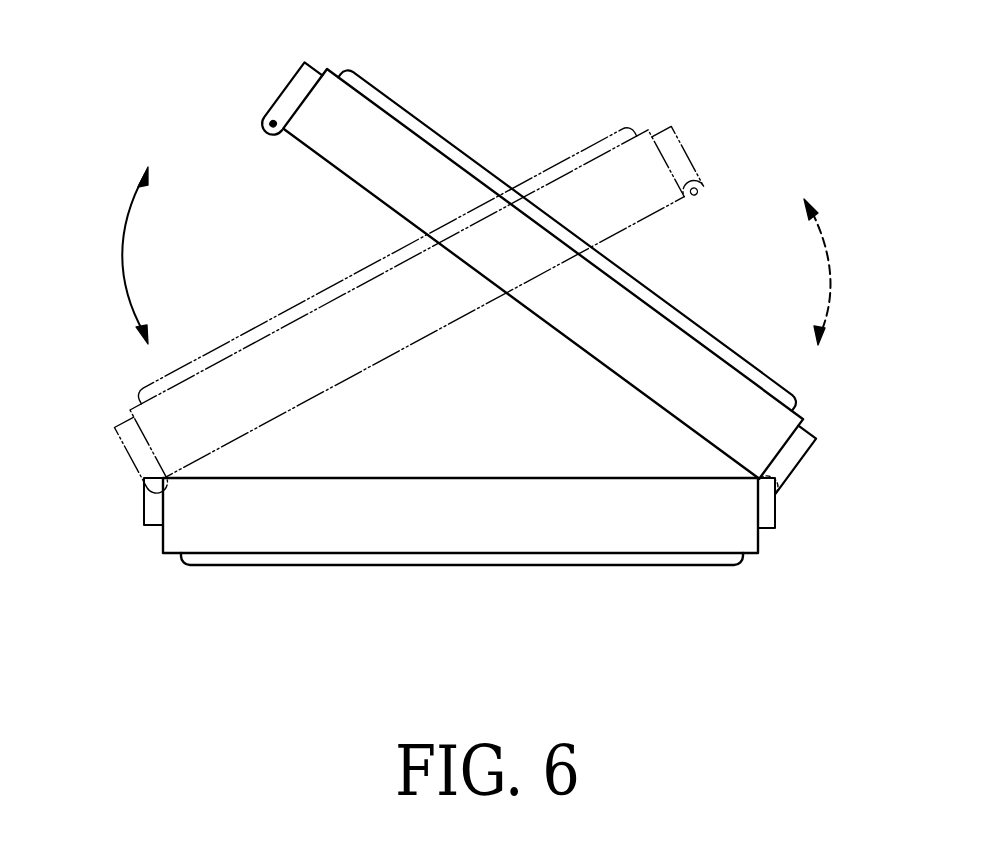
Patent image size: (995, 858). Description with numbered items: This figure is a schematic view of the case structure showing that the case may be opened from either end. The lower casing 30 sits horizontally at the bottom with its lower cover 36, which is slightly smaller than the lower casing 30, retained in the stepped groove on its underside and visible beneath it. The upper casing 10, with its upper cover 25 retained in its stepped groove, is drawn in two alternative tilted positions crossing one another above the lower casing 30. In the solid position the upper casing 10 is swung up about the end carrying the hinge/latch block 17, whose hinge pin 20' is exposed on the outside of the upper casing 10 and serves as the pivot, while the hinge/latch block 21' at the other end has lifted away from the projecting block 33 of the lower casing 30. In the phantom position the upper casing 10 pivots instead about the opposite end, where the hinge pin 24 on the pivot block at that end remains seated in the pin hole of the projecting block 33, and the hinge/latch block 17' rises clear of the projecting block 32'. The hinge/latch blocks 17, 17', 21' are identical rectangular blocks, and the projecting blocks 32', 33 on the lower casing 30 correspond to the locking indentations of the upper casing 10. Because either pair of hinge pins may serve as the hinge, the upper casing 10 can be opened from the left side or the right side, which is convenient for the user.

The upper casing 10 is at (343, 110).
The hinge/latch block 17 is at (273, 88).
The hinge/latch block 17' is at (107, 457).
The hinge pin 20' is at (269, 159).
The hinge/latch block 21' is at (769, 290).
The hinge pin 24 is at (699, 202).
The upper cover 25 is at (446, 142).
The lower casing 30 is at (398, 528).
The projecting block 32' is at (119, 519).
The projecting block 33 is at (768, 513).
The lower cover 36 is at (530, 562).